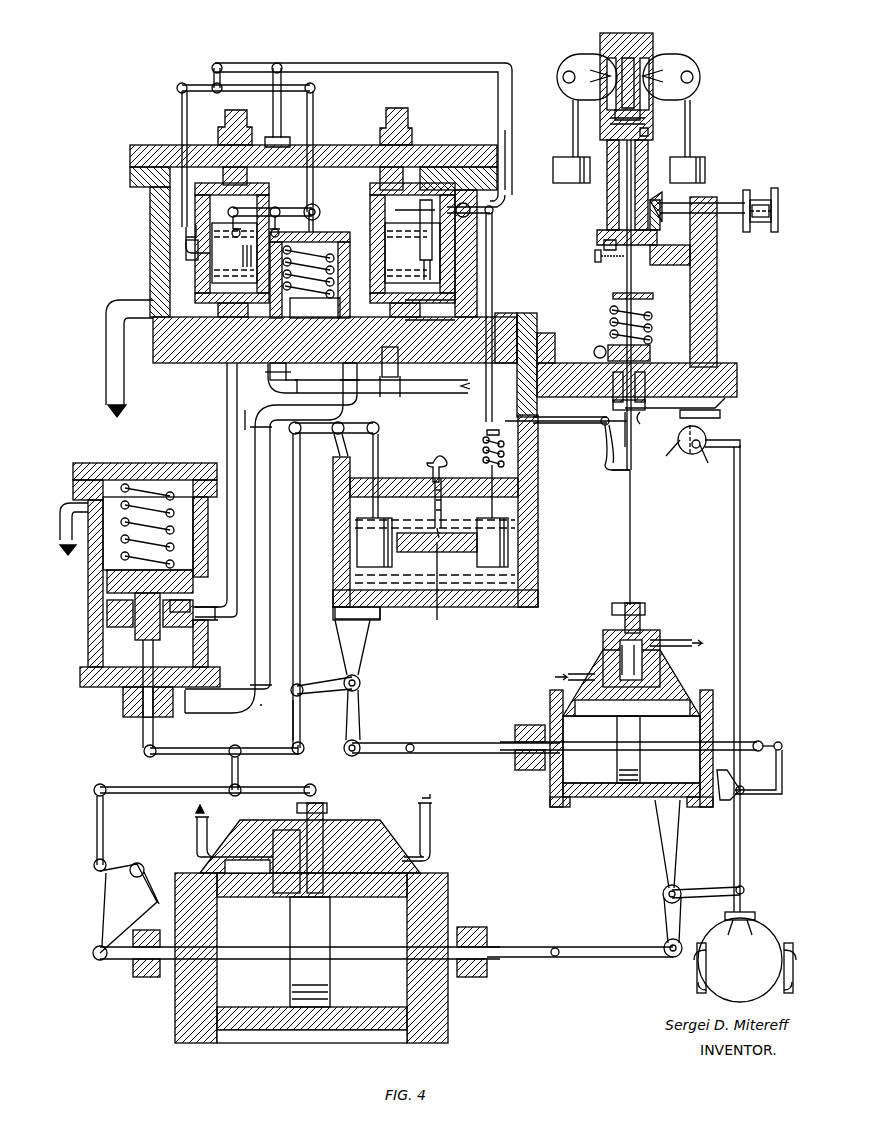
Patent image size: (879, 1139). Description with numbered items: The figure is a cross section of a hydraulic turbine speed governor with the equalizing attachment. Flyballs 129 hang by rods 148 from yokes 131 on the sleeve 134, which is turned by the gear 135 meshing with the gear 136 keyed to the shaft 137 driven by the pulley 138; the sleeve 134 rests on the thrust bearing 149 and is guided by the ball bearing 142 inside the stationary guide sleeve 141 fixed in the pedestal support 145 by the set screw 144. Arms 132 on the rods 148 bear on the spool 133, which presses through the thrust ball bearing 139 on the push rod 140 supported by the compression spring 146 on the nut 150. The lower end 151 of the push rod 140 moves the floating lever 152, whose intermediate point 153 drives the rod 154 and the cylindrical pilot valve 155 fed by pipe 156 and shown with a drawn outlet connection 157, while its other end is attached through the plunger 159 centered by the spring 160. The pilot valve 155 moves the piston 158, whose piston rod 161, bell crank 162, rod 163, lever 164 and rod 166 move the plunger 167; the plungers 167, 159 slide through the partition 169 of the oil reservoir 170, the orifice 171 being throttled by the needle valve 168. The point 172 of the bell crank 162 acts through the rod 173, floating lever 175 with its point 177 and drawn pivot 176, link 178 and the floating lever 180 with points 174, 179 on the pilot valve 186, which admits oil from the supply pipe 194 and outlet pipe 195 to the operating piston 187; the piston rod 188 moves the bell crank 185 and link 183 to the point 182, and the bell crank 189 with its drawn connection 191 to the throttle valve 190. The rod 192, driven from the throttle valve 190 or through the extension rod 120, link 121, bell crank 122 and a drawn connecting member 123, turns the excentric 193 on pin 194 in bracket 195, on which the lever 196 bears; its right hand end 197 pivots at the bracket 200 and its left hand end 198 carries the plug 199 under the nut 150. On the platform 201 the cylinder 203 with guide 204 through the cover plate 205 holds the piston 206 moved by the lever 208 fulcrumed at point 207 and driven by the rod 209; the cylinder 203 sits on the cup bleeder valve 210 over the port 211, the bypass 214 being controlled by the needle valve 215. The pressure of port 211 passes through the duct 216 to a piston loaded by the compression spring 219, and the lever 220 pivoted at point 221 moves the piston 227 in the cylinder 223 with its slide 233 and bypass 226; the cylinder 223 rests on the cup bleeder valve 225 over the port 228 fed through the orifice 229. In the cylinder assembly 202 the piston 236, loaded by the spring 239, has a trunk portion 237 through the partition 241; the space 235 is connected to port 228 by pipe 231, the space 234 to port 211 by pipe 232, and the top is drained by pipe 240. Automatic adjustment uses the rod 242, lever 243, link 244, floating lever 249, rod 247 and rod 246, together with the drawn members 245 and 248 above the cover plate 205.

The extension rod 120 is at (726, 743).
The link 121 is at (778, 743).
The bell crank 122 is at (782, 762).
The link 123 is at (720, 806).
The flyballs 129 is at (566, 182).
The yokes 131 is at (555, 63).
The arms 132 is at (590, 58).
The spool 133 is at (630, 34).
The sleeve 134 is at (648, 141).
The gear 135 is at (654, 229).
The gear 136 is at (660, 194).
The shaft 137 is at (734, 200).
The pulley 138 is at (769, 203).
The thrust ball bearing 139 is at (617, 113).
The push rod 140 is at (614, 181).
The stationary guide sleeve 141 is at (605, 215).
The ball bearing 142 is at (648, 142).
The set screw 144 is at (594, 268).
The pedestal support 145 is at (650, 285).
The compression spring 146 is at (647, 316).
The rods 148 is at (573, 120).
The thrust bearing 149 is at (571, 254).
The nut 150 is at (641, 353).
The lower end 151 is at (628, 411).
The floating lever 152 is at (552, 436).
The intermediate point 153 is at (603, 428).
The rod 154 is at (505, 421).
The cylindrical pilot valve 155 is at (653, 660).
The pipe 156 is at (566, 674).
The outlet 157 is at (670, 645).
The piston 158 is at (526, 489).
The plunger 159 is at (520, 532).
The tension-compression spring 160 is at (485, 440).
The piston rod 161 is at (446, 770).
The bell crank 162 is at (363, 712).
The rod 163 is at (295, 615).
The lever 164 is at (357, 422).
The rod 166 is at (380, 463).
The plunger 167 is at (365, 528).
The needle valve 168 is at (447, 473).
The partition 169 is at (472, 548).
The reservoir 170 is at (536, 580).
The orifice 171 is at (437, 545).
The point 172 is at (299, 688).
The rod 173 is at (295, 715).
The point 174 is at (303, 752).
The floating lever 175 is at (264, 754).
The pivot 176 is at (238, 750).
The point 177 is at (156, 751).
The link 178 is at (230, 761).
The point 179 is at (232, 797).
The floating lever 180 is at (172, 794).
The point 182 is at (105, 786).
The link 183 is at (105, 830).
The bell crank 185 is at (125, 903).
The pilot valve 186 is at (328, 825).
The operating piston 187 is at (290, 1030).
The piston rod 188 is at (150, 974).
The bell crank 189 is at (666, 918).
The throttle valve 190 is at (753, 941).
The link 191 is at (743, 890).
The rod 192 is at (740, 576).
The excentric 193 is at (688, 454).
The pin 194 is at (706, 450).
The bracket 195 is at (700, 424).
The lever 196 is at (642, 426).
The right hand end 197 is at (722, 413).
The left hand end 198 is at (620, 417).
The plug 199 is at (614, 479).
The bracket 200 is at (728, 404).
The platform 201 is at (524, 320).
The cylinder assembly 202 is at (90, 596).
The cylinder 203 is at (450, 149).
The guide 204 is at (392, 124).
The cover plate 205 is at (414, 149).
The piston 206 is at (430, 252).
The point 207 is at (473, 204).
The lever 208 is at (460, 222).
The rod 209 is at (485, 278).
The cup bleeder valve 210 is at (420, 301).
The port 211 is at (420, 316).
The bypass 214 is at (440, 265).
The needle valve 215 is at (440, 236).
The duct 216 is at (298, 372).
The compression spring 219 is at (330, 234).
The lever 220 is at (305, 210).
The point 221 is at (274, 207).
The cylinder 223 is at (185, 208).
The cup bleeder valve 225 is at (162, 362).
The bypass 226 is at (212, 251).
The piston 227 is at (185, 234).
The port 228 is at (270, 364).
The orifice 229 is at (257, 390).
The pipe 231 is at (230, 438).
The pipe 232 is at (254, 580).
The slide 233 is at (222, 123).
The space 234 is at (88, 677).
The space 235 is at (195, 603).
The piston 236 is at (108, 579).
The trunk portion 237 is at (128, 629).
The spring 239 is at (120, 560).
The pipe 240 is at (80, 498).
The partition 241 is at (108, 613).
The rod 242 is at (512, 135).
The lever 243 is at (410, 68).
The link 244 is at (215, 75).
The rod 245 is at (280, 65).
The rod 246 is at (182, 123).
The rod 247 is at (314, 128).
The stem 248 is at (280, 118).
The floating lever 249 is at (248, 98).